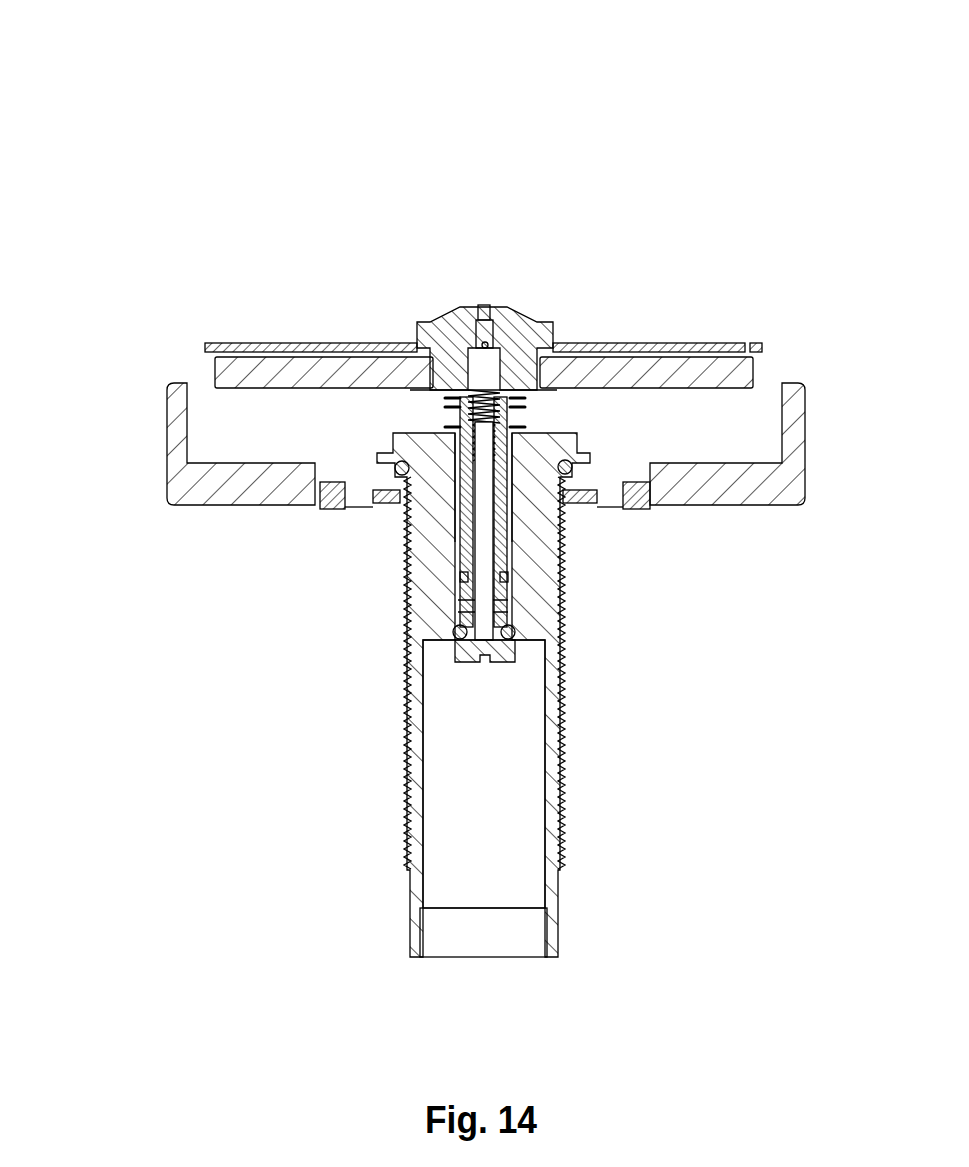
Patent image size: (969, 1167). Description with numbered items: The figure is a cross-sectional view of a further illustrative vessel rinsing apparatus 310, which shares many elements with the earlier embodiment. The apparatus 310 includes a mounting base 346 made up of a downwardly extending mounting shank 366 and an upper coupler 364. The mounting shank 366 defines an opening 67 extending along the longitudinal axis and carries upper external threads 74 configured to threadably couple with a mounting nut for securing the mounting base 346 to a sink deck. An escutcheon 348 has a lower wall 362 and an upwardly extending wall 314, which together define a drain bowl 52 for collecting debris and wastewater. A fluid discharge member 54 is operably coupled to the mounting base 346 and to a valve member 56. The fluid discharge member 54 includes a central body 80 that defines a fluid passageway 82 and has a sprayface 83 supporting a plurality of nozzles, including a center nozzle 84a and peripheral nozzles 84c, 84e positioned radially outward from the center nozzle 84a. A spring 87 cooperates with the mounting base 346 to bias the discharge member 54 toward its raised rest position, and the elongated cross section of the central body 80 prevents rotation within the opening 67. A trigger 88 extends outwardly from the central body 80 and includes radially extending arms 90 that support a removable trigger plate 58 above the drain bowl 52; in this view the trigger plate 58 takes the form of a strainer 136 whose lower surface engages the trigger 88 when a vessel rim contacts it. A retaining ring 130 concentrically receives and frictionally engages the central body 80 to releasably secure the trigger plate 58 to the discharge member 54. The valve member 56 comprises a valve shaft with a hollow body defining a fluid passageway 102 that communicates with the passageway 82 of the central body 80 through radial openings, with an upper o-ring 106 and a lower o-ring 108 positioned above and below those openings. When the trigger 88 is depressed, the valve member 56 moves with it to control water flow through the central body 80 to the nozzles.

The vessel rinsing apparatus 310 is at (745, 136).
The fluid discharge member 54 is at (579, 249).
The sprayface 83 is at (473, 307).
The center nozzle 84a is at (487, 308).
The peripheral nozzle 84c is at (443, 320).
The peripheral nozzle 84e is at (497, 342).
The strainer 136 is at (694, 339).
The trigger plate 58 is at (752, 334).
The retaining ring 130 is at (417, 323).
The drain bowl 52 is at (748, 408).
The upwardly extending wall 314 is at (173, 430).
The fluid passageway 82 is at (477, 368).
The spring 87 is at (525, 416).
The upper coupler 364 is at (415, 446).
The escutcheon 348 is at (810, 432).
The trigger 88 is at (242, 397).
The central body 80 is at (563, 506).
The arms 90 is at (696, 378).
The valve member 56 is at (455, 552).
The fluid passageway 102 is at (487, 569).
The lower wall 362 is at (752, 487).
The upper o-ring 106 is at (460, 576).
The lower o-ring 108 is at (510, 634).
The mounting base 346 is at (322, 672).
The opening 67 is at (513, 731).
The mounting shank 366 is at (405, 783).
The upper external threads 74 is at (563, 820).